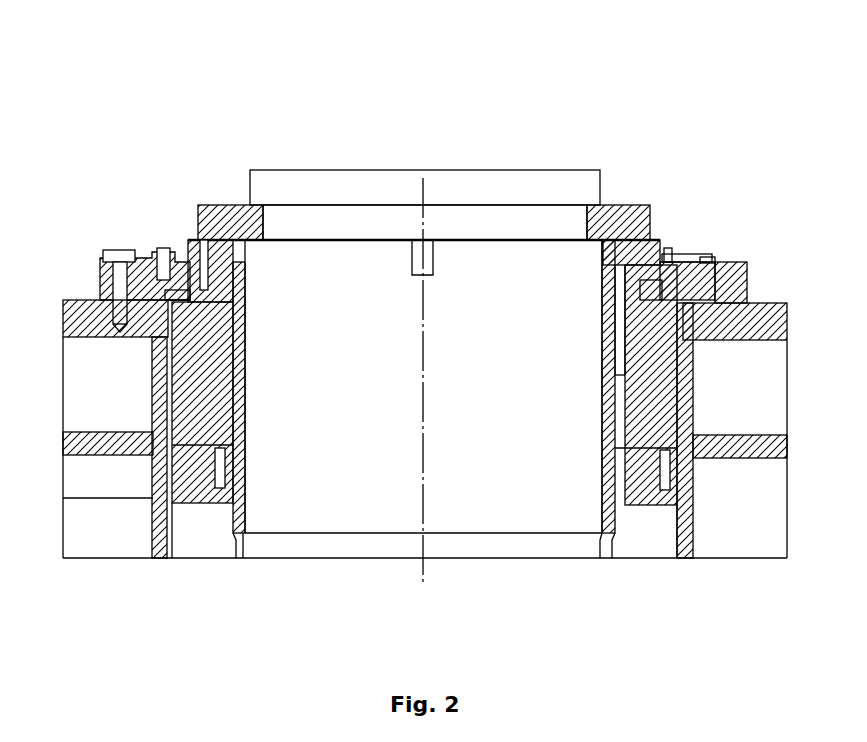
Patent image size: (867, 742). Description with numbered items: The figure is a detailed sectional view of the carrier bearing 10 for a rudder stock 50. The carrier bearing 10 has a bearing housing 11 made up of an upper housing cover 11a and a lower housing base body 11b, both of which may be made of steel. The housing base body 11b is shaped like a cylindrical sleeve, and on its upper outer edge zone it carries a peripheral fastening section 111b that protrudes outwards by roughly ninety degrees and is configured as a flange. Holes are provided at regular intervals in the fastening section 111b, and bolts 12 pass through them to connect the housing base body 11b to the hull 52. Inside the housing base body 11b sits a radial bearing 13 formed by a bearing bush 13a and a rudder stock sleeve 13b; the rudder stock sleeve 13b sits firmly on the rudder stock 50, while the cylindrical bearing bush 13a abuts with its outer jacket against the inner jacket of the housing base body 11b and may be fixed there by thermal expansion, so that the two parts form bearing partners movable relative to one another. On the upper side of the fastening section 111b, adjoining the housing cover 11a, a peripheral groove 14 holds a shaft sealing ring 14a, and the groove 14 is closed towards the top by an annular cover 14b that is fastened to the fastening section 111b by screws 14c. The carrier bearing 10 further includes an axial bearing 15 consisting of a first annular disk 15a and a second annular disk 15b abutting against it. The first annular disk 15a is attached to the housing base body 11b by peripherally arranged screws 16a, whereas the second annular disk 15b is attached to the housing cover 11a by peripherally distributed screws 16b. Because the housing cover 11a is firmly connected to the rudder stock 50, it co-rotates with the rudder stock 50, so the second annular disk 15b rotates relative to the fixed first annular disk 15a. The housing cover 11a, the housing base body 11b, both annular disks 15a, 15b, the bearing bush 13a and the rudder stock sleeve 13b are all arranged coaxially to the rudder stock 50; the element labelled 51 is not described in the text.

The carrier bearing 10 is at (508, 148).
The bearing housing 11 is at (180, 243).
The housing cover 11a is at (227, 242).
The housing base body 11b is at (192, 390).
The fastening section 111b is at (96, 264).
The bolts 12 is at (108, 250).
The radial bearing 13 is at (633, 403).
The bearing bush 13a is at (172, 338).
The rudder stock sleeve 13b is at (605, 517).
The peripheral groove 14 is at (605, 265).
The shaft sealing ring 14a is at (672, 258).
The annular cover 14b is at (685, 258).
The screws 14c is at (162, 248).
The axial bearing 15 is at (655, 290).
The first annular disk 15a is at (712, 262).
The second annular disk 15b is at (668, 255).
The screws 16a is at (190, 297).
The screws 16b is at (183, 248).
The rudder stock 50 is at (320, 487).
The support column 51 is at (162, 542).
The hull 52 is at (87, 322).